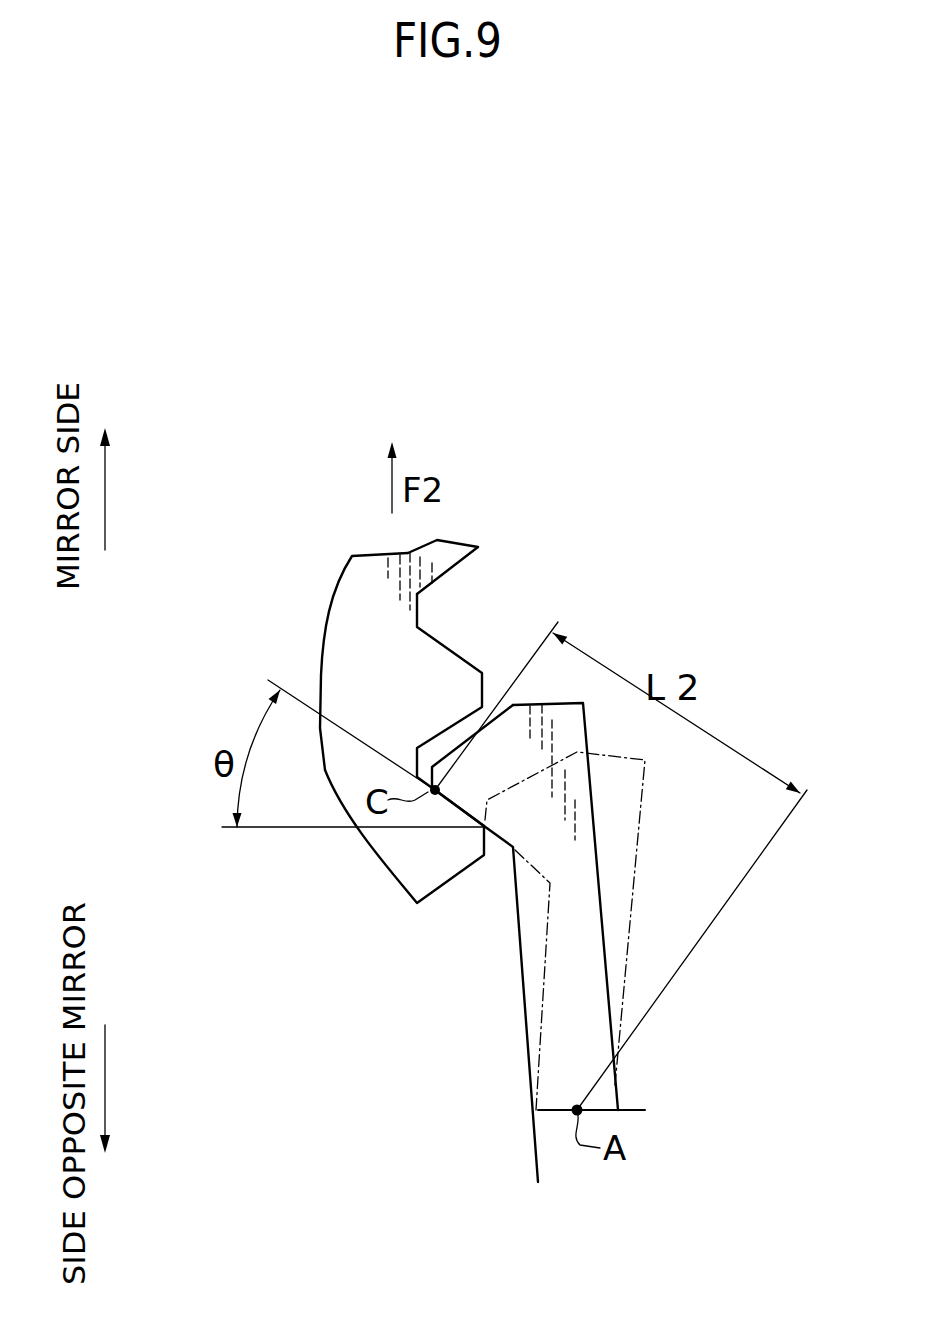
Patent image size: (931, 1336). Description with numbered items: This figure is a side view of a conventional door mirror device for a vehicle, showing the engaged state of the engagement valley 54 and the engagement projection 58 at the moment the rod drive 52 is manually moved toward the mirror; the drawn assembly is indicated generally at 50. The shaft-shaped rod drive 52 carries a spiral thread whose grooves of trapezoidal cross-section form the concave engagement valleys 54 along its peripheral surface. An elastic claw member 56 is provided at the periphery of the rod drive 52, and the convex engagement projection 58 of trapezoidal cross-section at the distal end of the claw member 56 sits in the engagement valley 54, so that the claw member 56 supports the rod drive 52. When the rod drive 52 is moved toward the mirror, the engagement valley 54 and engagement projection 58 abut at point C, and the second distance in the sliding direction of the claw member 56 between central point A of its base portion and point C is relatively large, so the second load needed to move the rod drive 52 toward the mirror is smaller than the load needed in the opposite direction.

The mirror holding assembly 50 is at (491, 356).
The rod drive 52 is at (345, 559).
The engagement valley 54 is at (463, 562).
The claw member 56 is at (514, 958).
The engagement projection 58 is at (441, 755).